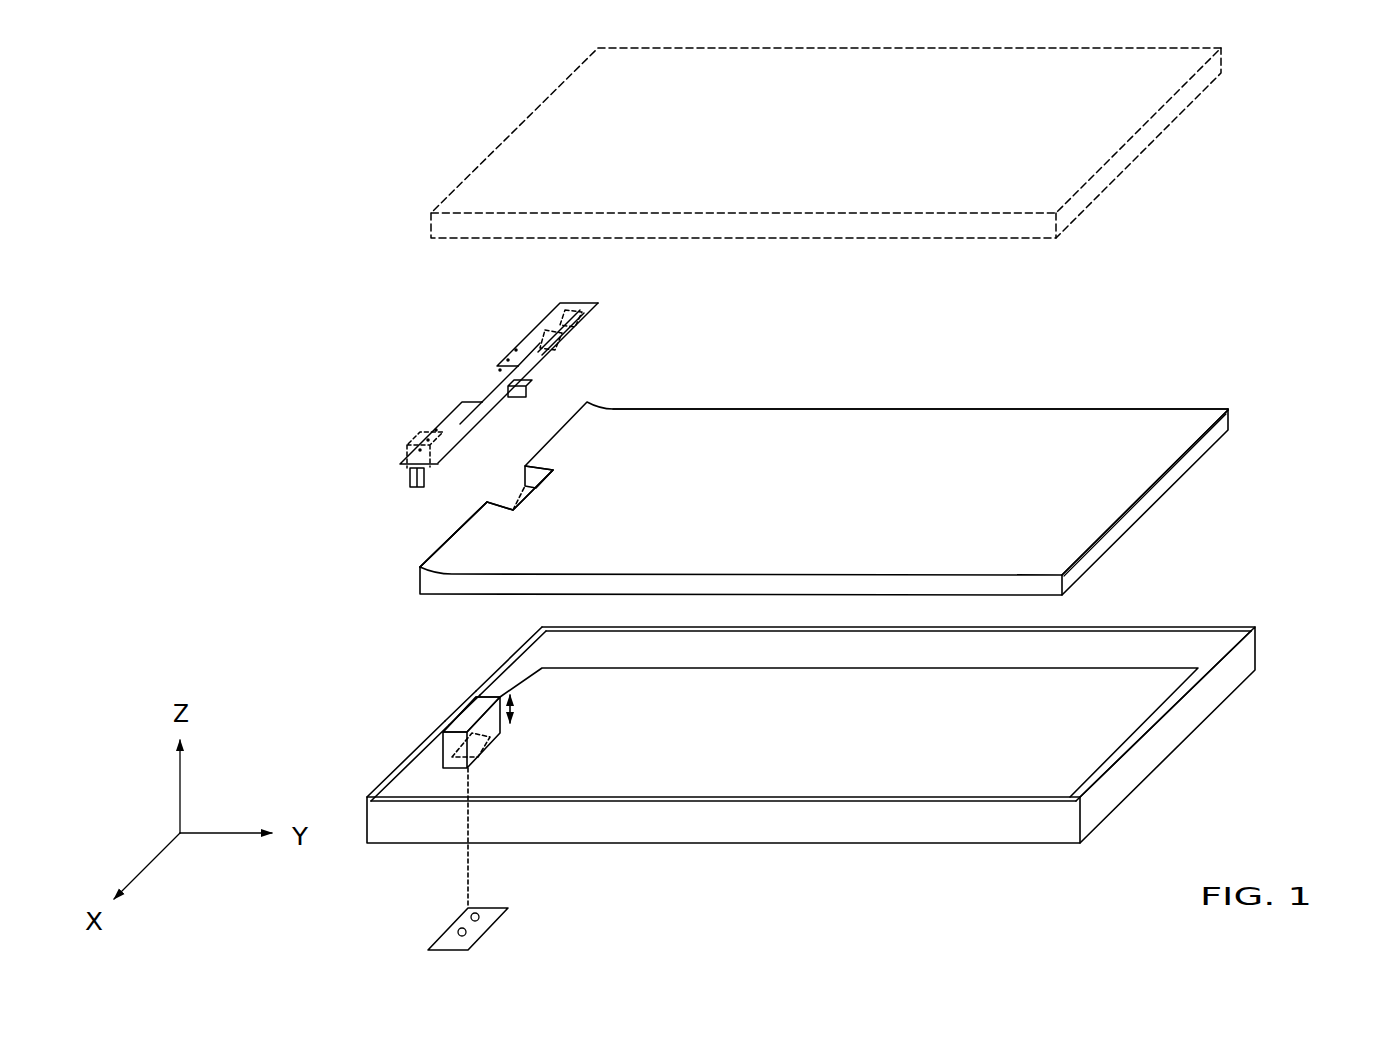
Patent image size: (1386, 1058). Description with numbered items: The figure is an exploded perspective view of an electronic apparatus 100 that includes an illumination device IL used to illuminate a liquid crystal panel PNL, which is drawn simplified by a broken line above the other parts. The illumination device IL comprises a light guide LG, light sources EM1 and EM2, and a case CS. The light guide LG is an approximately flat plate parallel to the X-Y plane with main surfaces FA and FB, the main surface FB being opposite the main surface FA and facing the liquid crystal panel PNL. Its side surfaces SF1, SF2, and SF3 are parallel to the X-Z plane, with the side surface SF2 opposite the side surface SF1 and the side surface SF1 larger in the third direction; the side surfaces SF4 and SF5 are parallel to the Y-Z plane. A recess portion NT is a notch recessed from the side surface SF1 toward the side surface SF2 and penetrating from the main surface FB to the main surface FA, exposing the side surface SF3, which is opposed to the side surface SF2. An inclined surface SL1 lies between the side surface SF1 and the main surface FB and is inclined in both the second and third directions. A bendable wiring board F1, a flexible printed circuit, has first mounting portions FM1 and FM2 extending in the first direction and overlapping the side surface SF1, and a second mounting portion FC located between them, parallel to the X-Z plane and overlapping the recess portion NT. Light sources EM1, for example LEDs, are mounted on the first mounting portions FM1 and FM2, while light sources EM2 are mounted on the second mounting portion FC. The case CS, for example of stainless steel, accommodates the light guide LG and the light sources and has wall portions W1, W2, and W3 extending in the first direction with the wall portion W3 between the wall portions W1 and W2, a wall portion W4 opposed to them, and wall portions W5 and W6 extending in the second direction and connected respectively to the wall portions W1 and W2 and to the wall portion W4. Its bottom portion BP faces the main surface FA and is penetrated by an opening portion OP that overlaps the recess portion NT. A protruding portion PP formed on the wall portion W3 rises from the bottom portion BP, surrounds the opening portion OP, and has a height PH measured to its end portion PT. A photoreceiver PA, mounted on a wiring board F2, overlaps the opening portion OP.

The electronic apparatus 100 is at (356, 128).
The liquid crystal panel PNL is at (1150, 82).
The illumination device IL is at (1324, 481).
The light guide LG is at (1182, 425).
The main surface FA is at (1131, 540).
The main surface FB is at (1124, 467).
The side surface SF1 is at (459, 514).
The side surface SF2 is at (1161, 488).
The side surface SF3 is at (524, 487).
The side surface SF4 is at (979, 582).
The side surface SF5 is at (1077, 399).
The inclined surface SL1 is at (451, 538).
The recess portion NT is at (499, 486).
The second mounting portion FC is at (492, 386).
The first mounting portion FM1 is at (459, 404).
The first mounting portion FM2 is at (524, 331).
The light source EM1 is at (413, 466).
The light source EM2 is at (529, 401).
The wiring board F1 is at (559, 311).
The wiring board F2 is at (445, 938).
The photoreceiver PA is at (480, 917).
The case CS is at (1258, 652).
The bottom portion BP is at (783, 768).
The wall portion W1 is at (514, 654).
The wall portion W2 is at (416, 746).
The wall portion W3 is at (451, 711).
The wall portion W4 is at (1140, 732).
The wall portion W5 is at (1144, 626).
The wall portion W6 is at (1003, 796).
The end portion PT is at (491, 694).
The protruding portion PP is at (488, 732).
The height PH is at (512, 700).
The opening portion OP is at (488, 748).